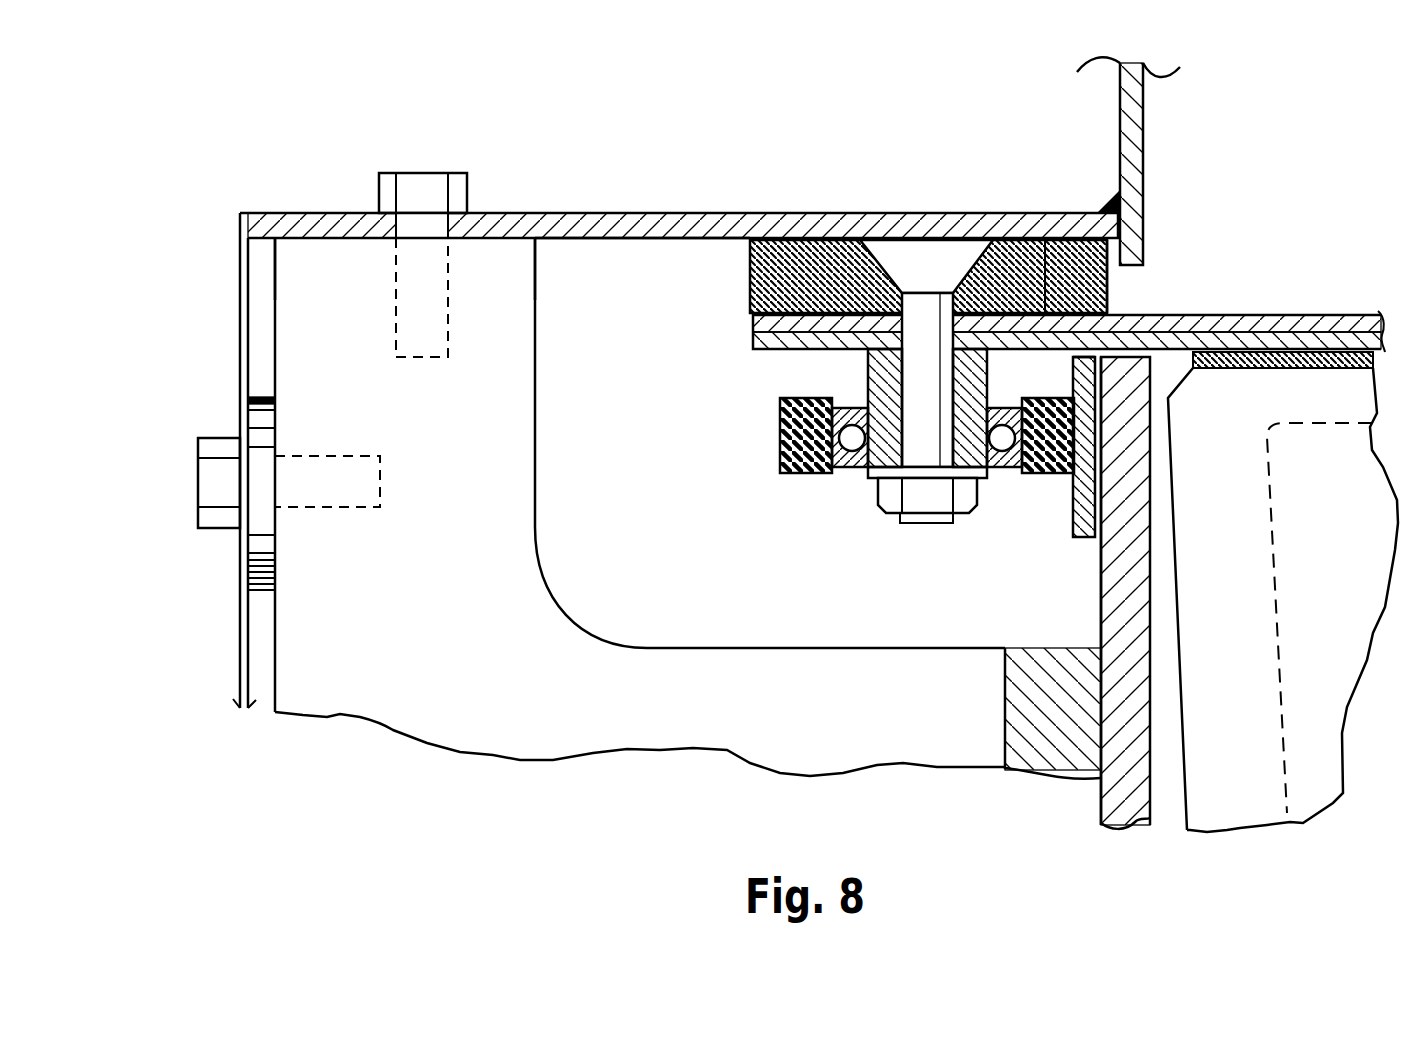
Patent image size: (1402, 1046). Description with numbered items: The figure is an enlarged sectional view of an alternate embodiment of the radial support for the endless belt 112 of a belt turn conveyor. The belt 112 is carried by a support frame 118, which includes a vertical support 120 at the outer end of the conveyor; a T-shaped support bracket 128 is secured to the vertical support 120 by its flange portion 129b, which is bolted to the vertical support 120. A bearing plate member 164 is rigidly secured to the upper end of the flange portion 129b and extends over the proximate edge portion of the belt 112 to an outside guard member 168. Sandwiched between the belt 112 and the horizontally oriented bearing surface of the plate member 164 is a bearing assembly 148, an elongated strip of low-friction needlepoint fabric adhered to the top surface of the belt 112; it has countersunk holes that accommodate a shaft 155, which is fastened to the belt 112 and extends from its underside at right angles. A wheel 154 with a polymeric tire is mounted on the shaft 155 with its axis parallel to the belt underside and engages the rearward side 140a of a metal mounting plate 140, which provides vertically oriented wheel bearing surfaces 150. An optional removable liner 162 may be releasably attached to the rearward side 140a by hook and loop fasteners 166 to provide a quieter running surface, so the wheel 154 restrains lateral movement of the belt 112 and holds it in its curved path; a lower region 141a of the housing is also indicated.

The support frame 118 is at (206, 291).
The vertical support 120 is at (262, 612).
The flange portion 129b is at (457, 373).
The support bracket 128 is at (507, 257).
The bearing plate member 164 is at (598, 223).
The housing upper wall 141a is at (668, 240).
The bearing assembly 148 is at (790, 240).
The removable liner 162 is at (1105, 310).
The endless belt 112 is at (1297, 313).
The shaft 155 is at (916, 320).
The wheel 154 is at (1052, 395).
The outside guard member 168 is at (1135, 147).
The wheel bearing surface 150 is at (1102, 547).
The hook and loop fastener 166 is at (1083, 357).
The mounting plate 140 is at (1128, 588).
The rearward side 140a is at (1102, 580).